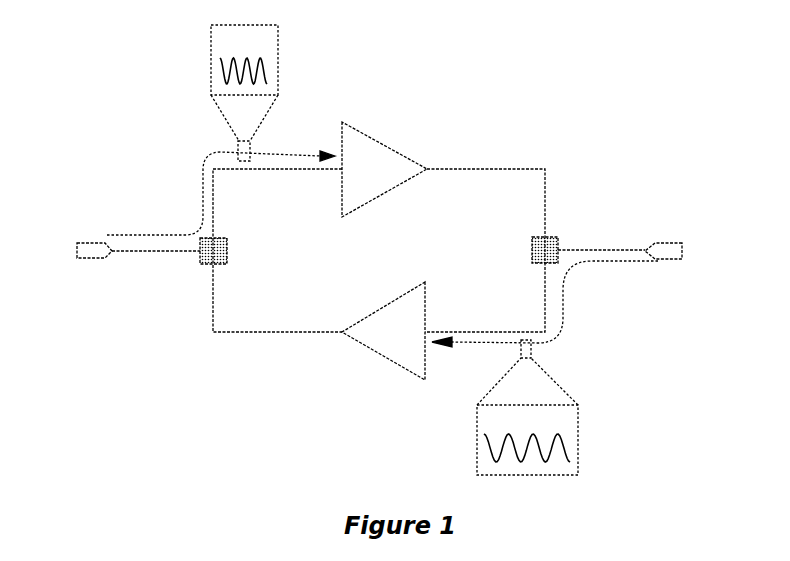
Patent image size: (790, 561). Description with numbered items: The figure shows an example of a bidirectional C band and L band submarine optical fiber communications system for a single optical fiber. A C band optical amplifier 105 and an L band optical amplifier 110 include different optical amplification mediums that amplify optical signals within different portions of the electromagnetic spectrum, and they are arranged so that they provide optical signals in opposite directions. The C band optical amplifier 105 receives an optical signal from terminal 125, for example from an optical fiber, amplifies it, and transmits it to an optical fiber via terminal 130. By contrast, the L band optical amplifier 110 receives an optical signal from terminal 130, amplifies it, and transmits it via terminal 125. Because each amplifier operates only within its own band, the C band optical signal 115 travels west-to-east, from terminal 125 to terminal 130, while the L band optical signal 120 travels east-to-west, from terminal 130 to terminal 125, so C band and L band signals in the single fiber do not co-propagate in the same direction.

The C band optical amplifier 105 is at (379, 141).
The L band optical amplifier 110 is at (388, 303).
The C band optical signal 115 is at (188, 232).
The L band optical signal 120 is at (590, 265).
The terminal 125 is at (88, 243).
The terminal 130 is at (657, 243).